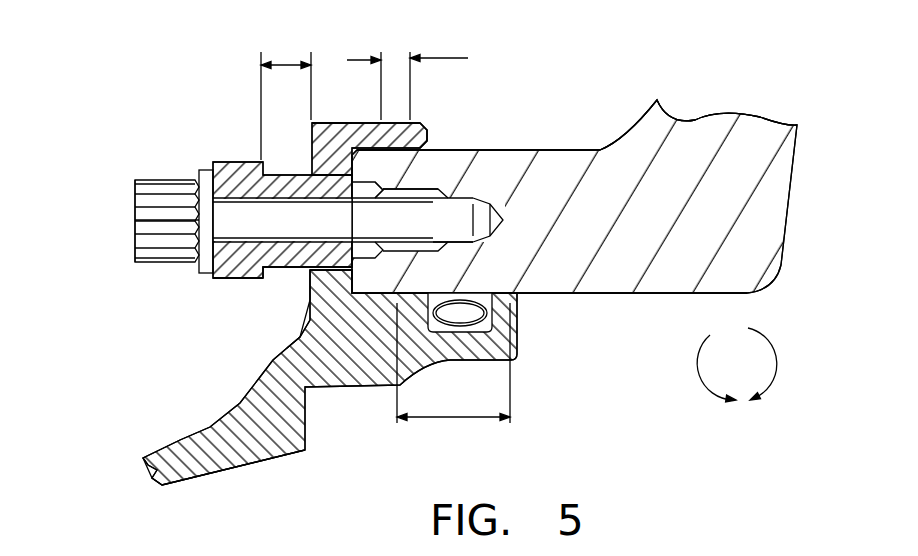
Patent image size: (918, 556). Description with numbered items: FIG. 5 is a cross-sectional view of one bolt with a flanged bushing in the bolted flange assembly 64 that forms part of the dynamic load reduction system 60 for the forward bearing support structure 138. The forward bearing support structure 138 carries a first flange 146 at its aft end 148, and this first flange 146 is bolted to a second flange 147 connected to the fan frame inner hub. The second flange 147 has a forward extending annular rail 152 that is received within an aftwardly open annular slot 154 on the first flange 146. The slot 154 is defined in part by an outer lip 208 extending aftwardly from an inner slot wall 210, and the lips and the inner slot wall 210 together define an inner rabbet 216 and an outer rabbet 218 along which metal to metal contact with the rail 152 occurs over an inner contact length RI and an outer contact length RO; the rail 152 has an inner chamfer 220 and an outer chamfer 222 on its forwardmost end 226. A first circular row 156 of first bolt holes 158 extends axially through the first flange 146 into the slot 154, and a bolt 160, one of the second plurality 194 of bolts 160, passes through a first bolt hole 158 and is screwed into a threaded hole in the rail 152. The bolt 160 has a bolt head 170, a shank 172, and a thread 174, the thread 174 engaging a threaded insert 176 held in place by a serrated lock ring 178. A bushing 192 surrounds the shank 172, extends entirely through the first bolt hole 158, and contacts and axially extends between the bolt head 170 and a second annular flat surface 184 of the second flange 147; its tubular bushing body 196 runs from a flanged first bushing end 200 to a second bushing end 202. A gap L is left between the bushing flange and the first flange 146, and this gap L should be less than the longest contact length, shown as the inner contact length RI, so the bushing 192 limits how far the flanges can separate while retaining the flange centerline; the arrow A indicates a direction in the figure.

The dynamic load reduction system 60 is at (255, 82).
The gap L is at (288, 60).
The outer contact length RO is at (447, 58).
The inner contact length RI is at (453, 418).
The first flange 146 is at (318, 121).
The second annular flat surface 184 is at (332, 123).
The first circular row 156 is at (312, 140).
The bushing 192 is at (262, 160).
The bolt head 170 is at (166, 180).
The bolt 160 is at (135, 201).
The second plurality of the bolts 194 is at (116, 251).
The shank 172 is at (196, 265).
The first bushing end 200 is at (213, 280).
The tubular bushing body 196 is at (285, 268).
The first bolt hole 158 is at (308, 273).
The second bushing end 202 is at (310, 318).
The inner chamfer 220 is at (300, 347).
The aft end 148 is at (375, 387).
The forward bearing support structure 138 is at (218, 470).
The bolted flange assembly 64 is at (128, 459).
The inner rabbet 216 is at (365, 292).
The forwardmost end 226 is at (360, 174).
The serrated lock ring 178 is at (358, 240).
The inner slot wall 210 is at (440, 190).
The outer rabbet 218 is at (385, 183).
The threaded insert 176 is at (445, 244).
The thread 174 is at (460, 290).
The annular slot 154 is at (445, 150).
The outer lip 208 is at (432, 140).
The outer chamfer 222 is at (370, 180).
The forward extending annular rail 152 is at (525, 150).
The second flange 147 is at (724, 113).
The rotation direction A is at (769, 325).